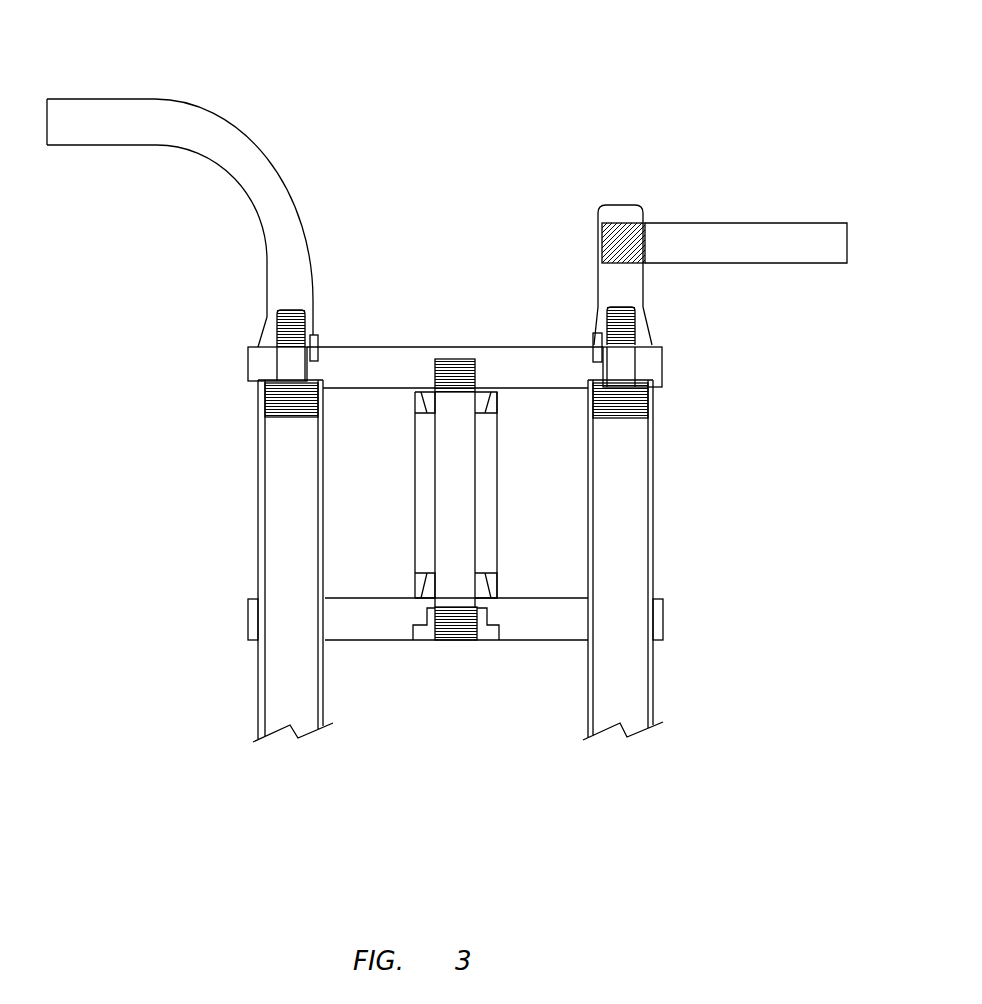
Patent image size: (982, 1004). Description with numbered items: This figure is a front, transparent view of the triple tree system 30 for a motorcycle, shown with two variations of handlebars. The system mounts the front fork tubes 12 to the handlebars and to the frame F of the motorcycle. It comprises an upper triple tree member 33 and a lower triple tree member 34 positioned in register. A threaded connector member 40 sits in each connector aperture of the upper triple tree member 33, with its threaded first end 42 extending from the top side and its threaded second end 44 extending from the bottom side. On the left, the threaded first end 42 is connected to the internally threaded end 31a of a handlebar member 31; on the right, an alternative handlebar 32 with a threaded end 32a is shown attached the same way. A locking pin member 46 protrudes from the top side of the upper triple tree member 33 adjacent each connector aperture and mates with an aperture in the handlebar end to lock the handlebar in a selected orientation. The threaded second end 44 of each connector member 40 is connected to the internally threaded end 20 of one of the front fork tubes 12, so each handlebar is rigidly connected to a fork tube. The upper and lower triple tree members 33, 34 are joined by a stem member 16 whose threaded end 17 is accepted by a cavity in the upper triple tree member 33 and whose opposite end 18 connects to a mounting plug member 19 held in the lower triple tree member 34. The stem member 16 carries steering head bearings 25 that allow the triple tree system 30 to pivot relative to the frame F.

The triple tree system 30 is at (431, 396).
The handlebar member 31 is at (180, 167).
The internally threaded end of handlebar member 31a is at (229, 320).
The handlebar 32 is at (724, 208).
The threaded end of handlebar 32a is at (683, 275).
The threaded first end of connector member 42 is at (462, 304).
The threaded connector member 40 is at (457, 358).
The locking pin member 46 is at (456, 327).
The upper triple tree member 33 is at (455, 303).
The threaded end of stem member 17 is at (493, 320).
The front fork tube 12 is at (454, 561).
The threaded second end of connector member 44 is at (446, 391).
The internally threaded end of front fork tube 20 is at (457, 495).
The steering head bearings 25 is at (477, 512).
The stem member 16 is at (453, 499).
The frame F is at (452, 522).
The mounting plug member 19 is at (456, 643).
The threaded end of stem member 18 is at (423, 659).
The lower triple tree member 34 is at (463, 678).